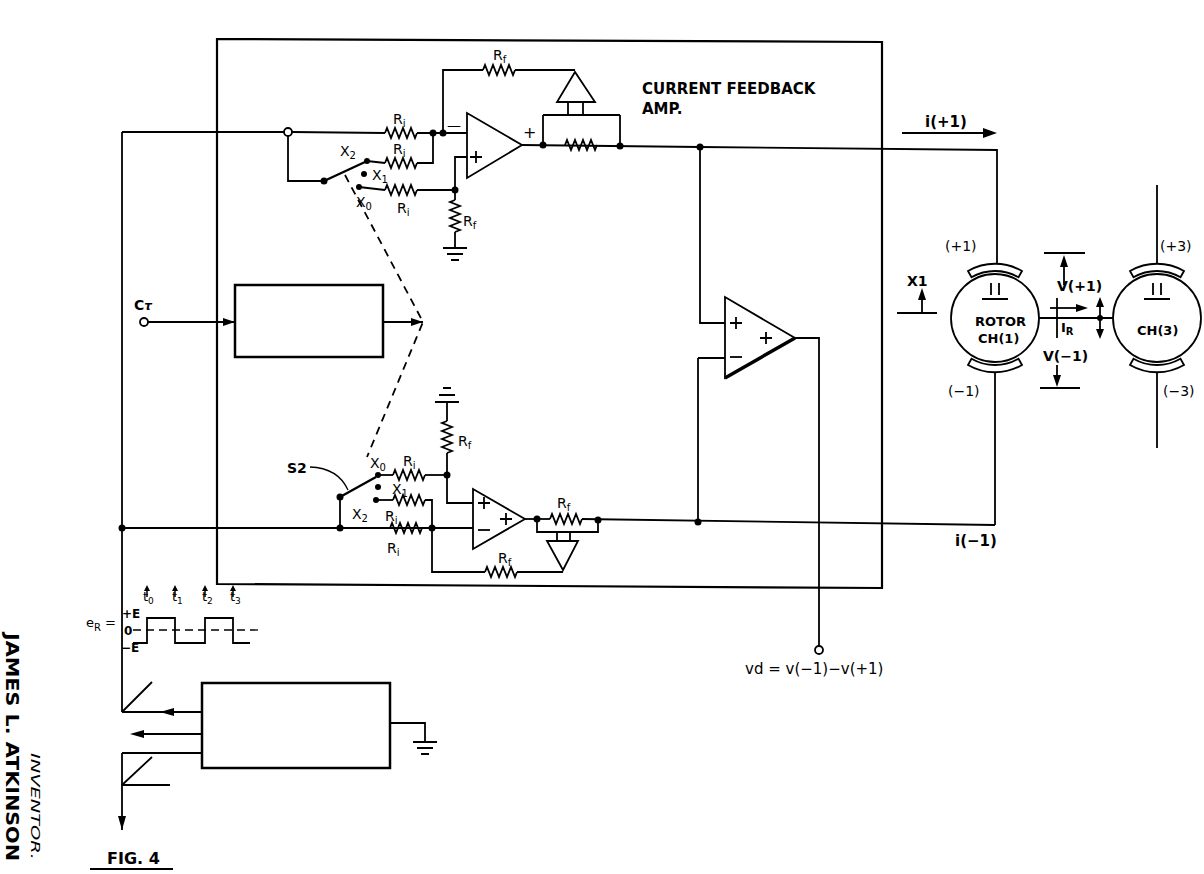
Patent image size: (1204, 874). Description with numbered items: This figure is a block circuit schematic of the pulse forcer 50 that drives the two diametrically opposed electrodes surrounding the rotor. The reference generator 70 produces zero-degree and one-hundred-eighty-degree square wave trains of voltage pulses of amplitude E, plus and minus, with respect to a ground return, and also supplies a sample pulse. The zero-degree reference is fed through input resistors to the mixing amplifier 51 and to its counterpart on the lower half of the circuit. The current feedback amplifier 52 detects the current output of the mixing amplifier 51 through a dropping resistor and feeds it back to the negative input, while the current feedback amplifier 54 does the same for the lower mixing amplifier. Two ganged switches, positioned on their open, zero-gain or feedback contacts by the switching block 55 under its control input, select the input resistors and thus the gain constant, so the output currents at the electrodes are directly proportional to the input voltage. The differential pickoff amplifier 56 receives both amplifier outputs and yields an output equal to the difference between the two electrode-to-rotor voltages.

The pulse forcer 50 is at (593, 616).
The mixing amplifier 51 is at (480, 138).
The current feedback amplifier 52 is at (578, 97).
The current feedback amplifier 54 is at (566, 551).
The switching block 55 is at (315, 338).
The differential pickoff amplifier 56 is at (735, 340).
The reference generator 70 is at (340, 738).